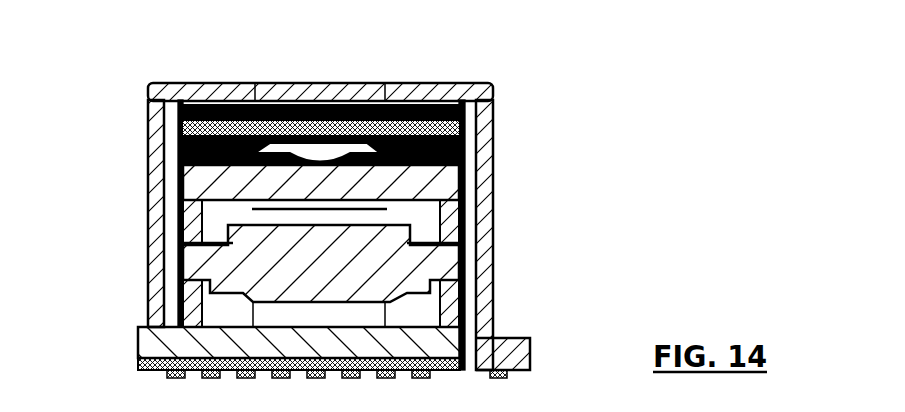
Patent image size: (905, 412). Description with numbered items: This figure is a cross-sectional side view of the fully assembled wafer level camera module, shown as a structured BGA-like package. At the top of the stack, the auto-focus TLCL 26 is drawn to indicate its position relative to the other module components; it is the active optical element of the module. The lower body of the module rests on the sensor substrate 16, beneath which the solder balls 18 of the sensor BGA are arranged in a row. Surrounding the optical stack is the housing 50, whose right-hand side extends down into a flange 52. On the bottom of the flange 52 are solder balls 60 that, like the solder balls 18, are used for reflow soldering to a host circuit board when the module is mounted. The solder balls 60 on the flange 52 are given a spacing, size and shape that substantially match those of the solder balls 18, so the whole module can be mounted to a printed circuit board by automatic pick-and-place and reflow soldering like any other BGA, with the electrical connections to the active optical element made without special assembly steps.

The substrate 16 is at (160, 352).
The solder balls of the sensor BGA 18 is at (172, 380).
The TLCL 26 is at (425, 122).
The housing 50 is at (480, 227).
The flange 52 is at (503, 353).
The solder balls 60 is at (498, 378).